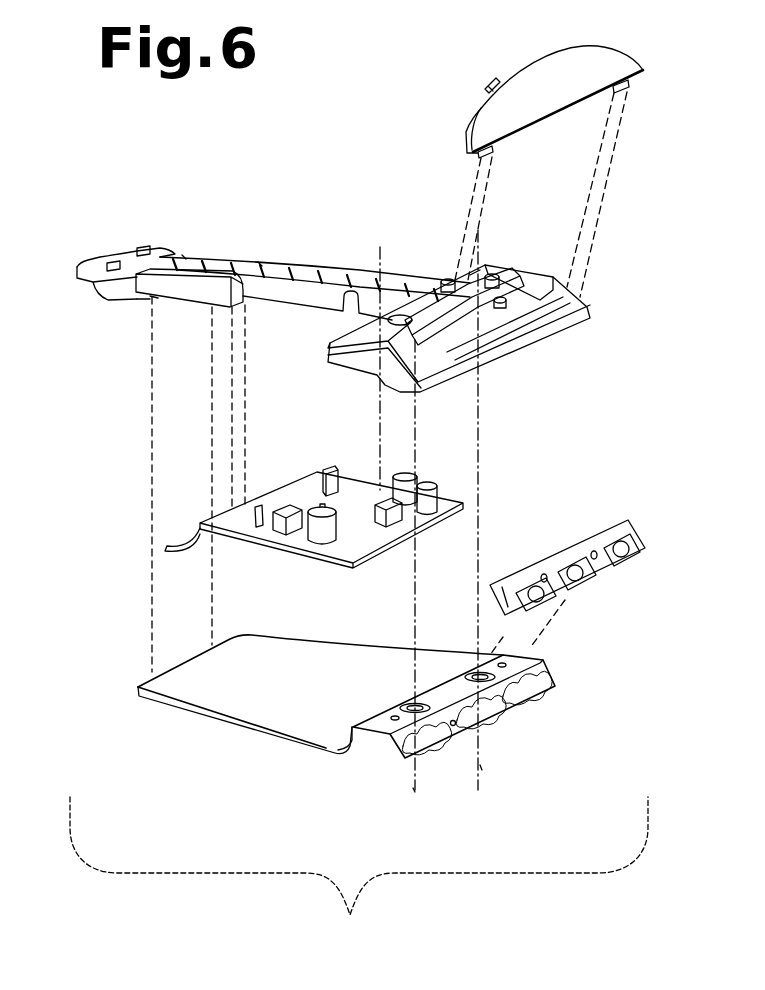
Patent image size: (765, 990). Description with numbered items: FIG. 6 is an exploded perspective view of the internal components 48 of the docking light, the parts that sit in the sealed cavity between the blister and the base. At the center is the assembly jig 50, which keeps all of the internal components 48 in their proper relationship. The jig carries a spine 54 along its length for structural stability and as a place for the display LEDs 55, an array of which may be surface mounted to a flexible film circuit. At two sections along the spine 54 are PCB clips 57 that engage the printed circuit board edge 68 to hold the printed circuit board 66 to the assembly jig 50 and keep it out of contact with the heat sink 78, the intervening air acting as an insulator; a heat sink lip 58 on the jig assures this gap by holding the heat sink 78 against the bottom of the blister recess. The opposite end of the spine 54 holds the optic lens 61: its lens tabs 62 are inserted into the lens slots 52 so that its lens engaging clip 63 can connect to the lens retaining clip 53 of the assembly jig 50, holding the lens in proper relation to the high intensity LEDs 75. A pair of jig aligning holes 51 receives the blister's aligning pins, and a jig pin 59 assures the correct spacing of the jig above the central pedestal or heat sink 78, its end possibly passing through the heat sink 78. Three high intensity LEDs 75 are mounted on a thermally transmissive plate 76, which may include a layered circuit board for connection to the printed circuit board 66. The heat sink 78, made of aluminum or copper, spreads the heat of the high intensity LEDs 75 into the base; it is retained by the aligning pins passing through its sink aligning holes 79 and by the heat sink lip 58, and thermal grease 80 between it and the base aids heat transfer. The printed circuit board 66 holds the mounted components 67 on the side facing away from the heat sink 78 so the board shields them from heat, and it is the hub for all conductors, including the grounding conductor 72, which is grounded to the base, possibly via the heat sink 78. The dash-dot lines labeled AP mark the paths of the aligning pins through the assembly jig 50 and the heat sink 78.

The internal components 48 is at (359, 874).
The assembly jig 50 is at (307, 243).
The jig aligning holes 51 is at (405, 320).
The lens slots 52 is at (555, 305).
The lens retaining clip 53 is at (446, 280).
The spine 54 is at (349, 266).
The display LEDs 55 is at (259, 263).
The PCB clips 57 is at (246, 310).
The heat sink lip 58 is at (152, 300).
The jig pin 59 is at (503, 310).
The optic lens 61 is at (476, 136).
The lens tabs 62 is at (497, 152).
The lens engaging clip 63 is at (490, 82).
The printed circuit board 66 is at (362, 493).
The mounted components 67 is at (326, 482).
The printed circuit board edge 68 is at (430, 520).
The grounding conductor 72 is at (185, 540).
The high intensity LEDs 75 is at (538, 585).
The thermally transmissive plate 76 is at (598, 565).
The heat sink 78 is at (217, 672).
The sink aligning holes 79 is at (410, 708).
The thermal grease 80 is at (240, 736).
The aligning pin paths AP is at (416, 788).